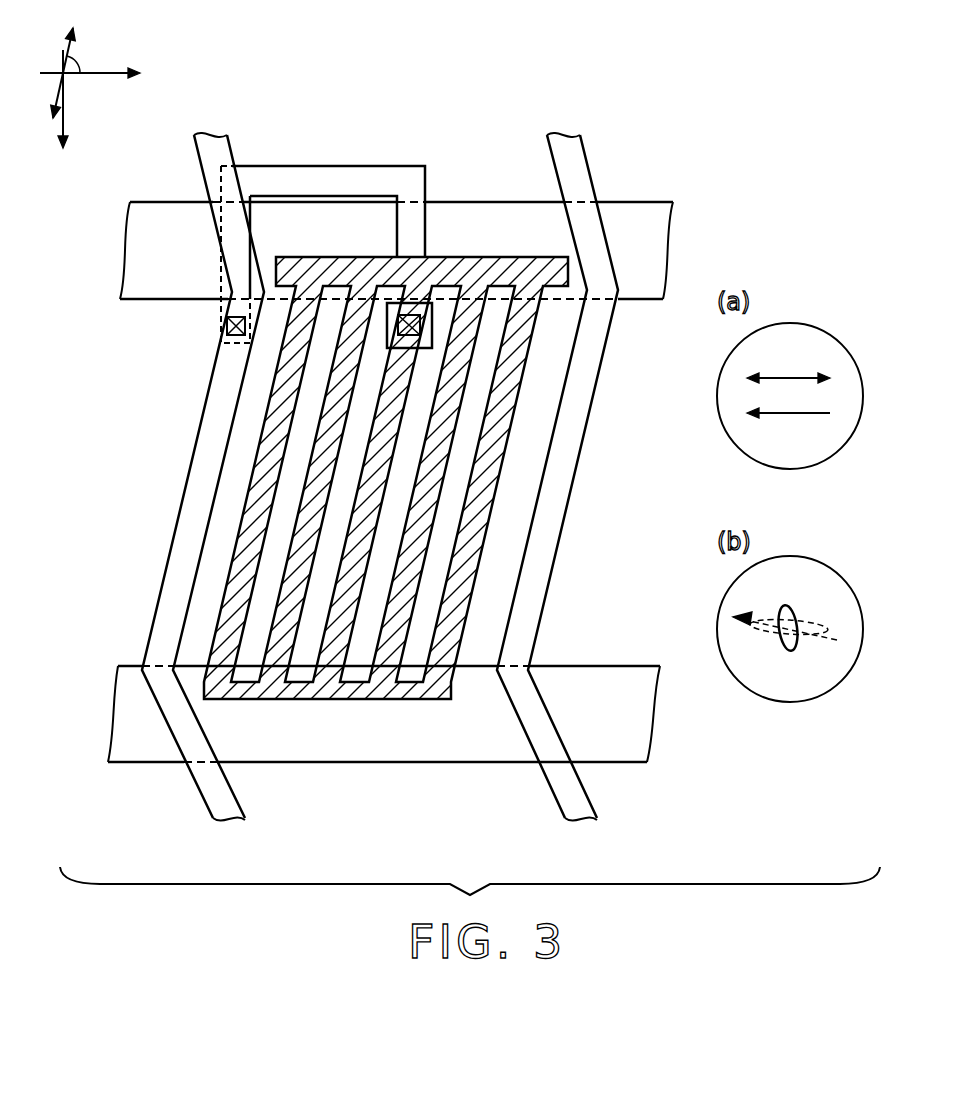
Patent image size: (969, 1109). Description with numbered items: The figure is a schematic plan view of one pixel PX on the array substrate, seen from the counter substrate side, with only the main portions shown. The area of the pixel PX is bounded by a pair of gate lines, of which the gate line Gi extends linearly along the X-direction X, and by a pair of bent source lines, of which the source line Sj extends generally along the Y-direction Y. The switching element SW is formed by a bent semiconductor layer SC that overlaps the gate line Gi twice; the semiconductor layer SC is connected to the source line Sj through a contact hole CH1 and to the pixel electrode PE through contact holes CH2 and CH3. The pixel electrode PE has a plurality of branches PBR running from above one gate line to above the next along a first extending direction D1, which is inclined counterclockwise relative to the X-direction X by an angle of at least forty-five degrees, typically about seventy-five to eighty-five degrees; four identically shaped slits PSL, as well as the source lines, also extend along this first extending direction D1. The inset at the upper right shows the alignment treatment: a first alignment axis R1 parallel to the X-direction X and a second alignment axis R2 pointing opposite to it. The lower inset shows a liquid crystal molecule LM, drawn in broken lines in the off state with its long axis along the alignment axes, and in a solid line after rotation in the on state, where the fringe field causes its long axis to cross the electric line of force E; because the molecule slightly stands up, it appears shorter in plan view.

The X-direction X is at (101, 74).
The Y-direction Y is at (64, 113).
The first extending direction D1 is at (74, 59).
The gate line Gi is at (158, 300).
The source line Sj is at (199, 797).
The switching element SW is at (293, 148).
The semiconductor layer SC is at (370, 165).
The pixel electrode PE is at (527, 355).
The branches PBR is at (290, 380).
The slits PSL is at (430, 600).
The contact hole CH1 is at (237, 346).
The contact hole CH2 is at (432, 310).
The contact hole CH3 is at (481, 249).
The pixel PX is at (650, 148).
The first alignment axis R1 is at (797, 377).
The second alignment axis R2 is at (788, 413).
The liquid crystal molecule LM is at (792, 607).
The electric line of force E is at (777, 620).